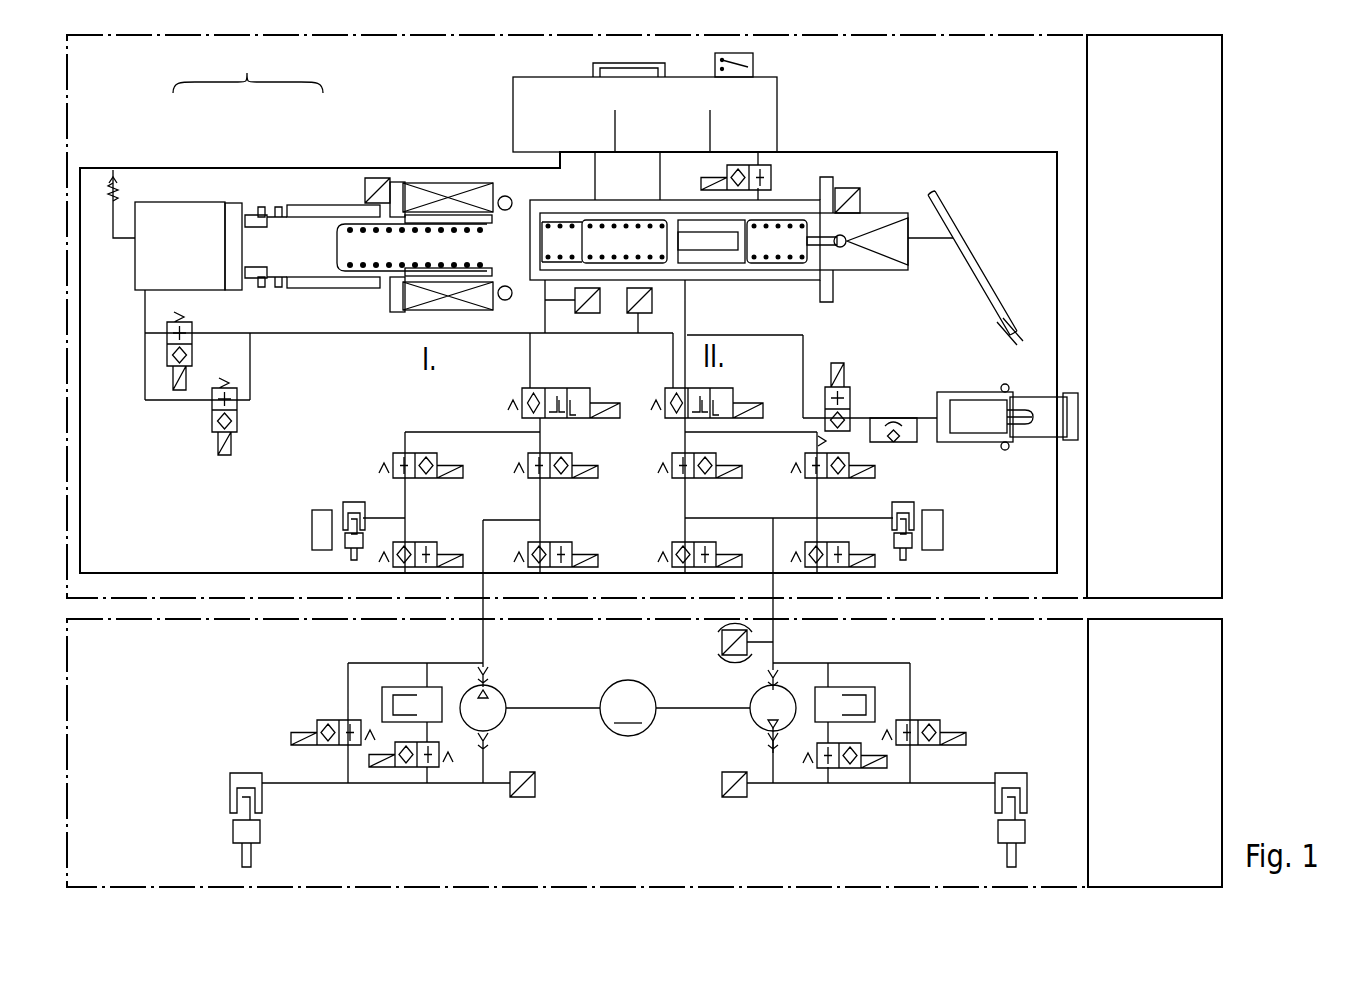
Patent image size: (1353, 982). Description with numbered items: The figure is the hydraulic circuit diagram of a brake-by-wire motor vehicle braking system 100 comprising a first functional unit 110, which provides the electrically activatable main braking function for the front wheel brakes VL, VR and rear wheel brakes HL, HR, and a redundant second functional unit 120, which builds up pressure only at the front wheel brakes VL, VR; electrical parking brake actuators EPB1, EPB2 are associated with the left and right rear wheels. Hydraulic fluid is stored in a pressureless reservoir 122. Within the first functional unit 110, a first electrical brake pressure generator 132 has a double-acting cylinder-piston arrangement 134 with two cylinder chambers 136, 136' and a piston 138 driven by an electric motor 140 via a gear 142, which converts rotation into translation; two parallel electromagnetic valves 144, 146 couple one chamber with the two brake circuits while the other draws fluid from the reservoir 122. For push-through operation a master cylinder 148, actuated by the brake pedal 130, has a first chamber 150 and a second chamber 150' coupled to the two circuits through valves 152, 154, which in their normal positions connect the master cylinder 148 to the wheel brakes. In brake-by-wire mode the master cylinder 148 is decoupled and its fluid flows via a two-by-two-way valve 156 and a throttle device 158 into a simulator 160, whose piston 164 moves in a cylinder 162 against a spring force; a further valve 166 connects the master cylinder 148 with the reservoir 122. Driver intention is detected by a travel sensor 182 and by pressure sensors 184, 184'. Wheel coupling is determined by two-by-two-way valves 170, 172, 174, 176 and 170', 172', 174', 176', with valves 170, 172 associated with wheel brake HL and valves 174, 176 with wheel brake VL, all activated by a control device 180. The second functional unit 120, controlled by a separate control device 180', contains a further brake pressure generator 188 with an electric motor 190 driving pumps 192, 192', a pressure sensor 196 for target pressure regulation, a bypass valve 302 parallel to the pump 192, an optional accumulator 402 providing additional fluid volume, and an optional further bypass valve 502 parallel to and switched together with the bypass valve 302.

The hydraulic motor vehicle braking system 100 is at (1238, 140).
The first functional unit 110 is at (126, 97).
The second functional unit 120 is at (135, 660).
The pressureless reservoir 122 is at (763, 103).
The brake pedal 130 is at (977, 270).
The first electrical brake pressure generator 132 is at (315, 200).
The double-acting cylinder-piston arrangement 134 is at (248, 65).
The cylinder chamber 136 is at (166, 190).
The cylinder chamber 136' is at (278, 189).
The piston 138 is at (223, 247).
The electric motor 140 is at (390, 297).
The gear 142 is at (433, 250).
The valve 144 is at (167, 360).
The valve 146 is at (237, 415).
The master cylinder 148 is at (833, 182).
The first chamber 150 is at (604, 208).
The second chamber 150' is at (742, 275).
The valve 152 is at (628, 422).
The valve 154 is at (733, 388).
The 2/2-way valve 156 is at (852, 387).
The throttle device 158 is at (893, 415).
The simulator 160 is at (1080, 425).
The cylinder 162 is at (985, 390).
The piston 164 is at (1027, 423).
The 2/2-way valve 166 is at (772, 180).
The 2/2-way valve 170 is at (415, 428).
The 2/2-way valve 170' is at (887, 474).
The 2/2-way valve 172 is at (436, 521).
The 2/2-way valve 172' is at (843, 605).
The 2/2-way valve 174 is at (520, 428).
The 2/2-way valve 174' is at (613, 522).
The 2/2-way valve 176 is at (651, 497).
The 2/2-way valve 176' is at (723, 525).
The control device 180 is at (1196, 316).
The control device 180' is at (1198, 753).
The travel sensor 182 is at (862, 193).
The pressure sensor 184 is at (575, 337).
The pressure sensor 184' is at (641, 337).
The further electrical brake pressure generator 188 is at (598, 698).
The electric motor 190 is at (635, 737).
The pump 192 is at (529, 721).
The pump 192' is at (801, 710).
The pressure sensor 196 is at (530, 797).
The bypass valve 302 is at (400, 767).
The accumulator 402 is at (382, 687).
The further bypass valve 502 is at (313, 727).
The rear left wheel brake HL is at (343, 510).
The rear right wheel brake HR is at (910, 553).
The front left wheel brake VL is at (227, 797).
The front right wheel brake VR is at (1015, 773).
The first parking brake actuator EPB1 is at (310, 530).
The second parking brake actuator EPB2 is at (943, 530).